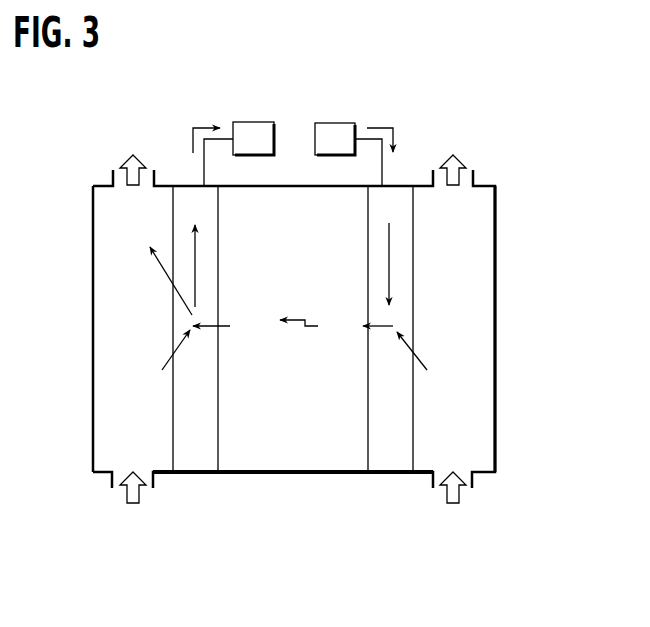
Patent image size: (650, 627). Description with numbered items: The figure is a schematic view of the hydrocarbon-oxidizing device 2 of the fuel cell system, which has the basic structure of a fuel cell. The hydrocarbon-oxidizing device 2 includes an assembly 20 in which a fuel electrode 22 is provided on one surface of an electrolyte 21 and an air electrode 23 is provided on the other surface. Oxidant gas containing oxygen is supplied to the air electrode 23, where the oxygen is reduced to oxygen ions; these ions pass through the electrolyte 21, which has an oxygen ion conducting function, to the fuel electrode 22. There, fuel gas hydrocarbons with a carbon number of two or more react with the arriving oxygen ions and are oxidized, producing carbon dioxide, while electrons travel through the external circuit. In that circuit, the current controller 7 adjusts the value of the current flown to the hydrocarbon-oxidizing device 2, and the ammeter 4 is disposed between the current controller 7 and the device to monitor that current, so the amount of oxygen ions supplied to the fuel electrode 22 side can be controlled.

The hydrocarbon-oxidizing device 2 is at (558, 113).
The ammeter 4 is at (252, 122).
The current controller 7 is at (332, 123).
The assembly 20 is at (282, 391).
The electrolyte 21 is at (290, 472).
The fuel electrode 22 is at (208, 472).
The air electrode 23 is at (381, 365).